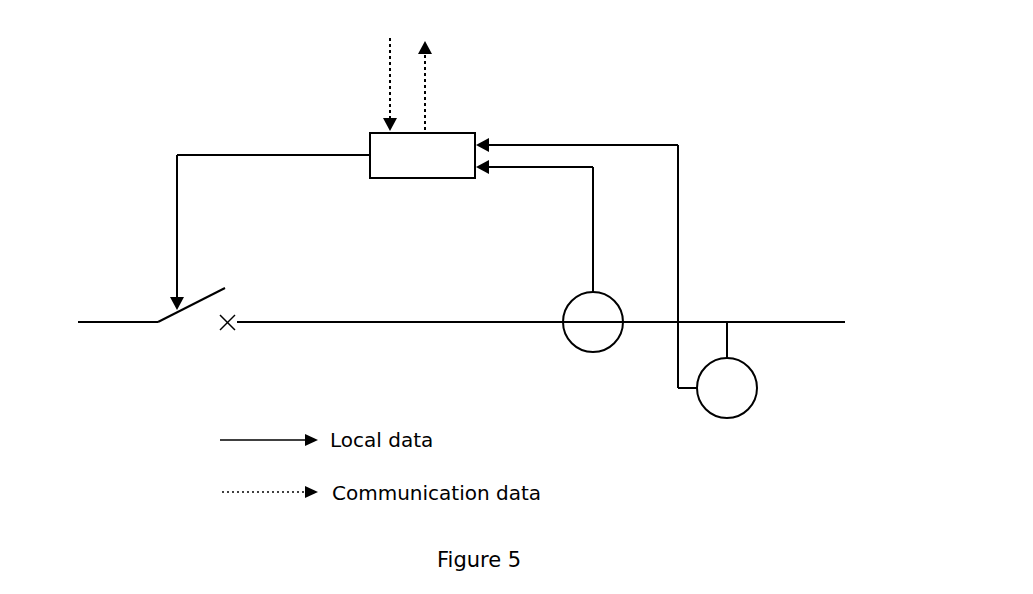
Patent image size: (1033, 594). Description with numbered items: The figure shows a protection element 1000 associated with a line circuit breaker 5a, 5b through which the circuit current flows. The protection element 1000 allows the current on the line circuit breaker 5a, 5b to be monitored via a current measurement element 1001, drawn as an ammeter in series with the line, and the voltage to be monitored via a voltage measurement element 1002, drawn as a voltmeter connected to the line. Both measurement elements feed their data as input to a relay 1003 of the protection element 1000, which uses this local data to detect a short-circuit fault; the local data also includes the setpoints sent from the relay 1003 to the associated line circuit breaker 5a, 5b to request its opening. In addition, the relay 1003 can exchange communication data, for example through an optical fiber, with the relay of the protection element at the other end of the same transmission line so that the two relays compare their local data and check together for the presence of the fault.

The protection element 1000 is at (447, 270).
The current measurement element 1001 is at (585, 351).
The voltage measurement element 1002 is at (710, 413).
The relay 1003 is at (450, 145).
The line circuit breaker 5a is at (137, 340).
The line circuit breaker 5b is at (181, 332).